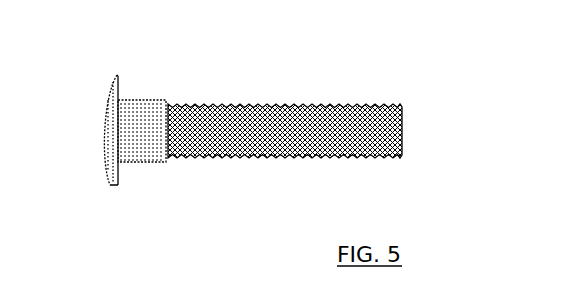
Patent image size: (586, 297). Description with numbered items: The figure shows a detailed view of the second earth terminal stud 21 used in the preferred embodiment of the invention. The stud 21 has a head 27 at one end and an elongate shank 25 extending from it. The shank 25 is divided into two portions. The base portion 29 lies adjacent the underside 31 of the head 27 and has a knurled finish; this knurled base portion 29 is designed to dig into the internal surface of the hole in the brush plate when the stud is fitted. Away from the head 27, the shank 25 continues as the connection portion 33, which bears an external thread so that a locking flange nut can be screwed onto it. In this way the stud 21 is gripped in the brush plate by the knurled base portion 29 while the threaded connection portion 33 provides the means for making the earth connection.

The second earth terminal stud 21 is at (219, 148).
The elongate shank 25 is at (262, 93).
The head 27 is at (104, 108).
The base portion 29 is at (162, 164).
The underside of the head 31 is at (127, 85).
The connection portion 33 is at (285, 130).